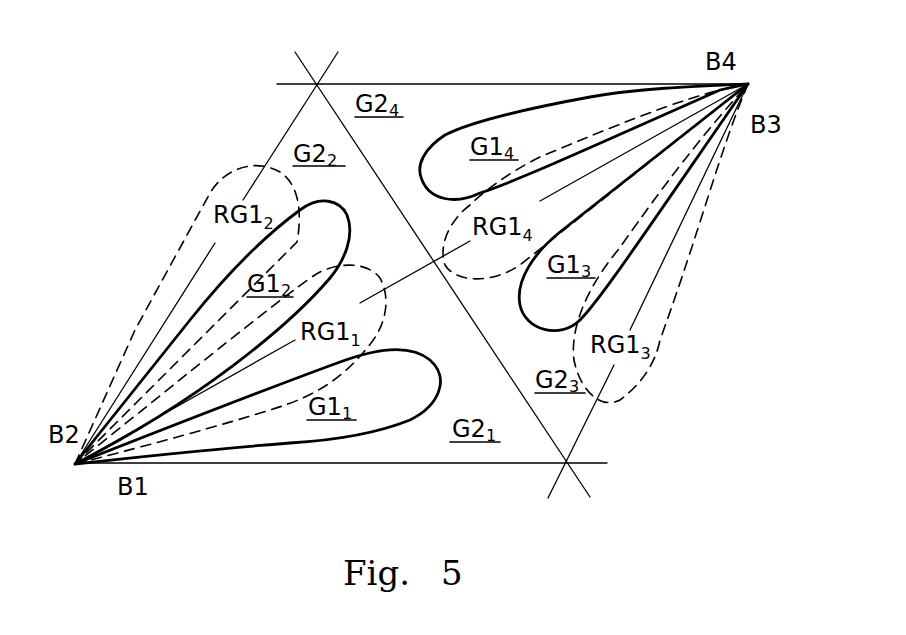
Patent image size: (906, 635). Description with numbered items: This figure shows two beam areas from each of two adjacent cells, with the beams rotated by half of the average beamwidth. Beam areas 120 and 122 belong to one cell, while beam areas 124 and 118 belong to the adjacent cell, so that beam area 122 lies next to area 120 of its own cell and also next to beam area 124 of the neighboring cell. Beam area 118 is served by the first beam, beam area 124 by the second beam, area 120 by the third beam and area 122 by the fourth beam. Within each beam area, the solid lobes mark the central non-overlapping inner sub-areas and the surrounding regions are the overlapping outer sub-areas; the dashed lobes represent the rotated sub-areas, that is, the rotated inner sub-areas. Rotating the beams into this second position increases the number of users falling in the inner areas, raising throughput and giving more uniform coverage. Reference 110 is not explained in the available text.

The lattice cell boundary line 110 is at (482, 464).
The beam area 118 is at (398, 433).
The beam area 120 is at (560, 422).
The beam area 122 is at (457, 98).
The beam area 124 is at (302, 117).